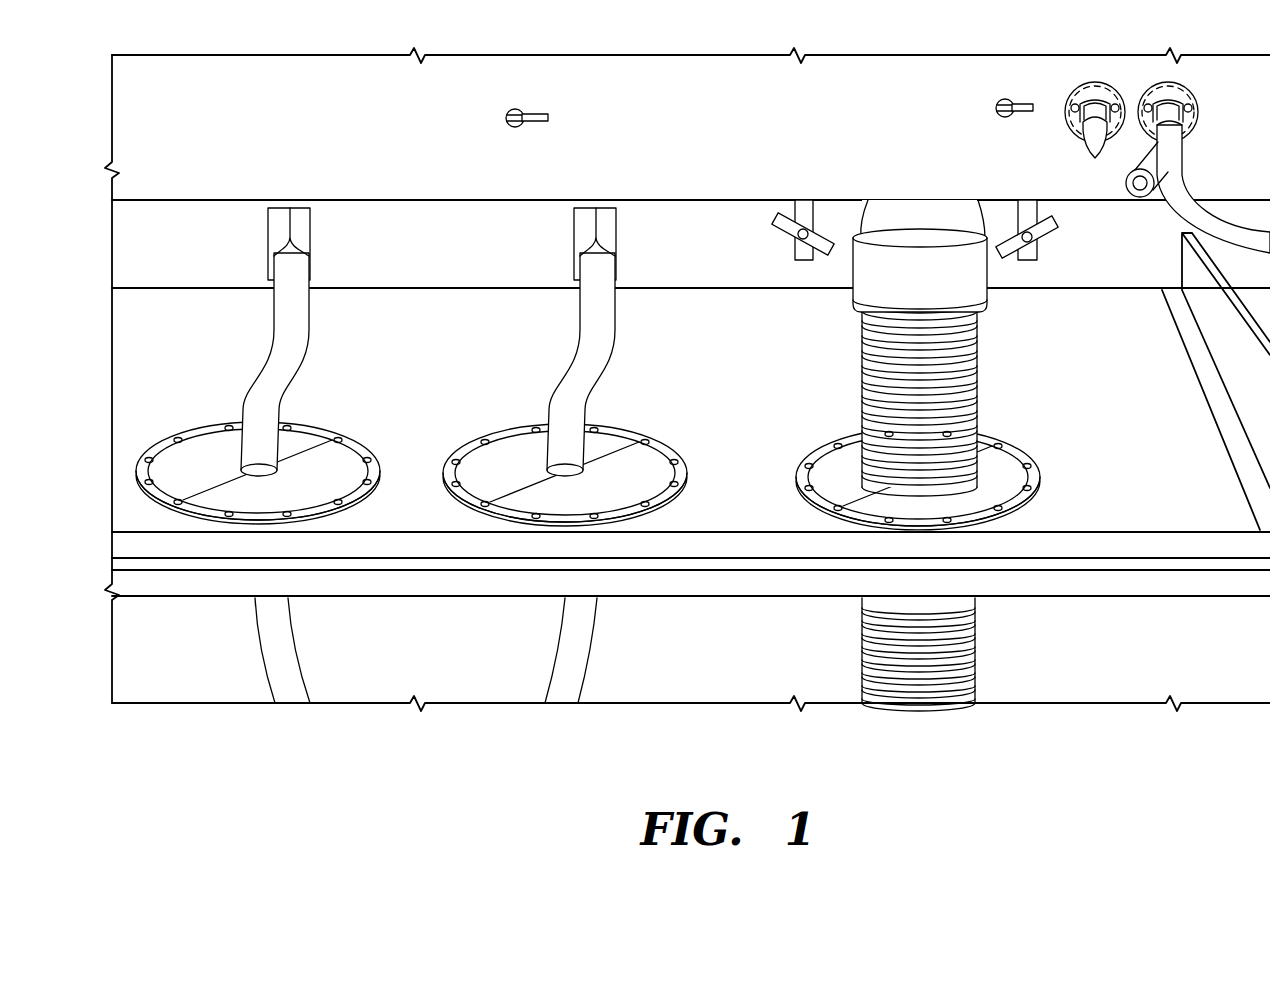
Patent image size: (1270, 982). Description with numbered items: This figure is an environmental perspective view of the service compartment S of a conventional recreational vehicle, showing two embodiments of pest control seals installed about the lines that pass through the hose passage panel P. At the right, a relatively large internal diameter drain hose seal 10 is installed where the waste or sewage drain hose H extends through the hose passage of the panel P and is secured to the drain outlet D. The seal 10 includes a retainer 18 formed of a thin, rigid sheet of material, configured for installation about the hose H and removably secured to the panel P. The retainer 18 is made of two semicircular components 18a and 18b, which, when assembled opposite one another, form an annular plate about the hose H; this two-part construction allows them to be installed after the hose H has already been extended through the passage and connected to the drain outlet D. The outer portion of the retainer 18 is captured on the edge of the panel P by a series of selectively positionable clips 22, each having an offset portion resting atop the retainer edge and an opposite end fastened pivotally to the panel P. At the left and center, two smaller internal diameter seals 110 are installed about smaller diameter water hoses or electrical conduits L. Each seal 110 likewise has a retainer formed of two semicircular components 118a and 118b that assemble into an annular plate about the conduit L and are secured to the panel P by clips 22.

The drain hose seal 10 is at (927, 455).
The retainer 18 is at (822, 425).
The semicircular retainer component 18a is at (815, 470).
The semicircular retainer component 18b is at (992, 453).
The clips 22 is at (460, 450).
The pest control seal 110 is at (444, 455).
The semicircular retainer component 118a is at (218, 435).
The semicircular retainer component 118b is at (333, 488).
The conduit L is at (277, 323).
The service compartment S is at (711, 121).
The drain outlet D is at (911, 268).
The drain hose H is at (977, 340).
The hose passage panel P is at (743, 523).